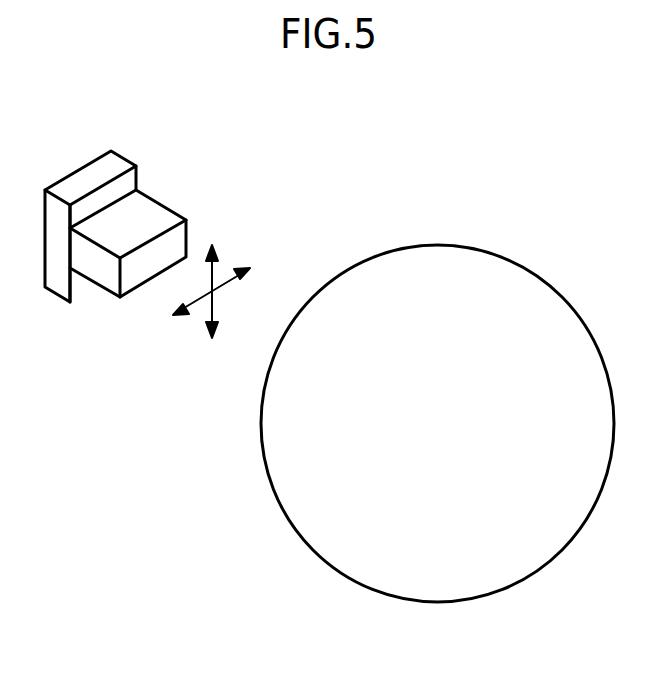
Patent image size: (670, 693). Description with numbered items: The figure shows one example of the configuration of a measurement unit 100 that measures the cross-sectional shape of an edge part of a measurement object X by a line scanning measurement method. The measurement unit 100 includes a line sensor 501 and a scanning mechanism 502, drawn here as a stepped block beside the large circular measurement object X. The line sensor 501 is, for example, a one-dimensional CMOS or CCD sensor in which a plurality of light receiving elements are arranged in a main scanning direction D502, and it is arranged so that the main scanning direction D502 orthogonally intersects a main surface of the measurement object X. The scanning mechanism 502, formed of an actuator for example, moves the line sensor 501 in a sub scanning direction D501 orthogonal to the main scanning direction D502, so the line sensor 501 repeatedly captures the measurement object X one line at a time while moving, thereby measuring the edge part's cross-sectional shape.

The measurement unit 100 is at (225, 140).
The line sensor 501 is at (146, 212).
The scanning mechanism 502 is at (92, 180).
The sub scanning direction D501 is at (213, 270).
The main scanning direction D502 is at (229, 278).
The measurement object X is at (503, 578).